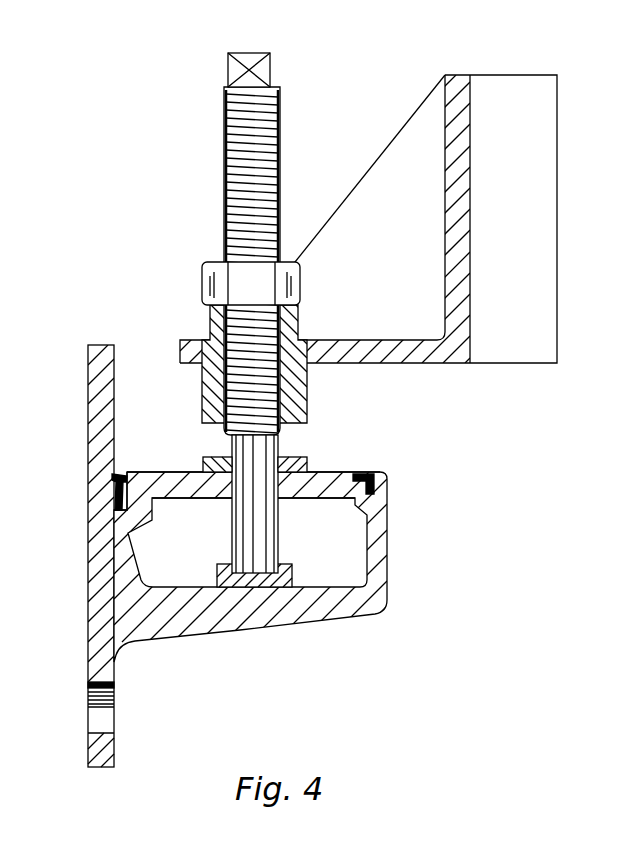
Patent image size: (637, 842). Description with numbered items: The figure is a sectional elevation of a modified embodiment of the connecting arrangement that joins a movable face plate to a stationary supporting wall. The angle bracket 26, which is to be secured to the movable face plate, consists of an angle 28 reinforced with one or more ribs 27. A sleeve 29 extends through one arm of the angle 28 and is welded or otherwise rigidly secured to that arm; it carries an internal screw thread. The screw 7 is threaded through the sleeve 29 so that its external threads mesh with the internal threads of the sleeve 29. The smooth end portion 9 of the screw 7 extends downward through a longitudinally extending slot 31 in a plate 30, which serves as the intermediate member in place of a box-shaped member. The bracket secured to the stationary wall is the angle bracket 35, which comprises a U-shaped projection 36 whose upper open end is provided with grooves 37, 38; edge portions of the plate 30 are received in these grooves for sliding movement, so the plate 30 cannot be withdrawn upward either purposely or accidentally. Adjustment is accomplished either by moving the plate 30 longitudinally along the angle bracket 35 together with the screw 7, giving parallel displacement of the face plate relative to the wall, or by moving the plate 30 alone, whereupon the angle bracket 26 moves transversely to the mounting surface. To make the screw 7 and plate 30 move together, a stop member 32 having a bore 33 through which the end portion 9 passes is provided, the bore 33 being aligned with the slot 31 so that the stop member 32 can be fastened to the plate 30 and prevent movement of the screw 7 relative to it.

The screw 7 is at (222, 167).
The smooth end portion 9 is at (263, 518).
The angle bracket 26 is at (477, 95).
The rib 27 is at (400, 165).
The angle 28 is at (390, 357).
The sleeve 29 is at (217, 380).
The plate 30 is at (117, 507).
The slot 31 is at (207, 495).
The stop member 32 is at (298, 456).
The bore 33 is at (225, 455).
The angle bracket 35 is at (87, 662).
The U-shaped projection 36 is at (317, 603).
The groove 37 is at (372, 490).
The groove 38 is at (120, 488).